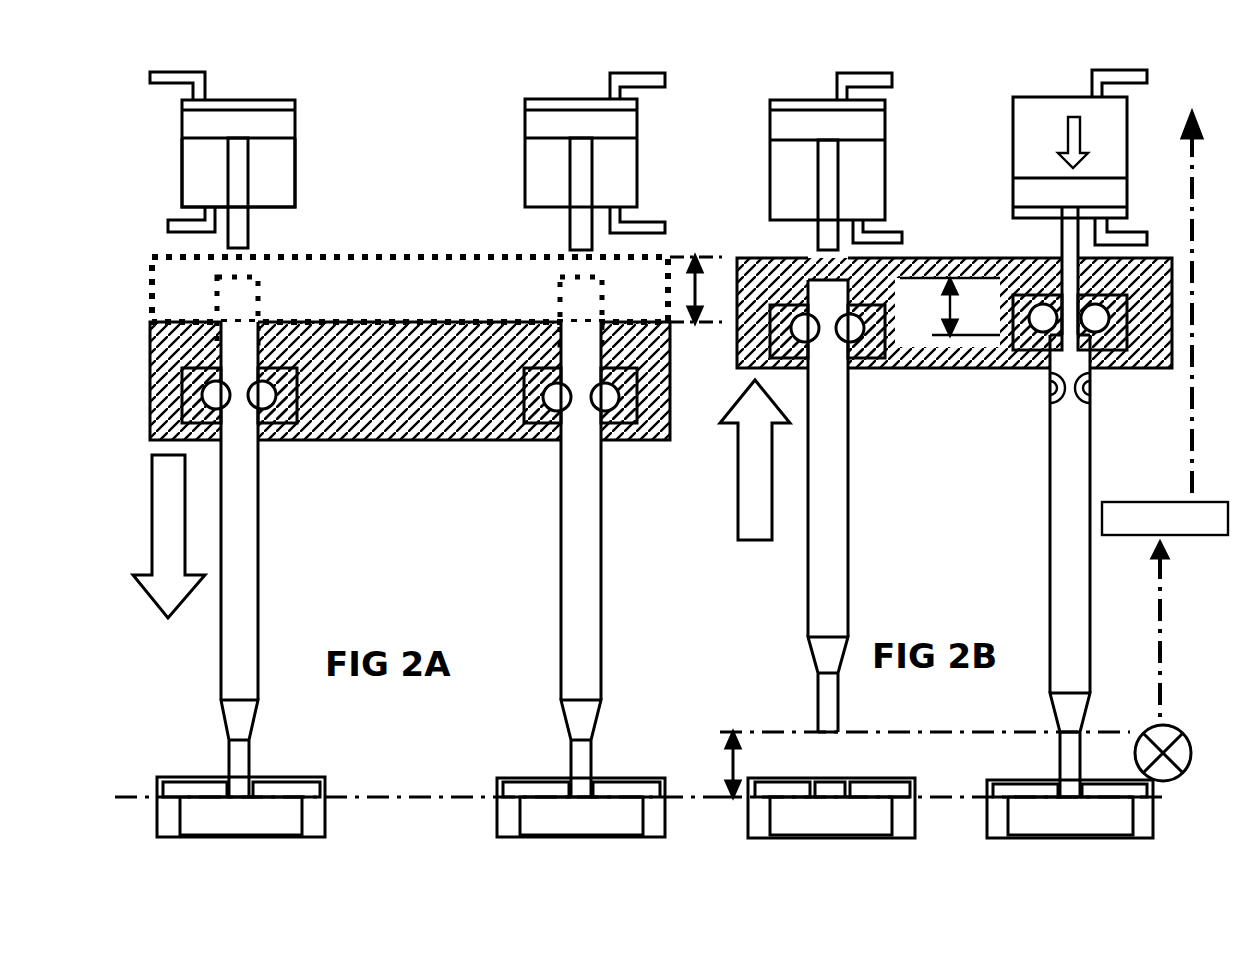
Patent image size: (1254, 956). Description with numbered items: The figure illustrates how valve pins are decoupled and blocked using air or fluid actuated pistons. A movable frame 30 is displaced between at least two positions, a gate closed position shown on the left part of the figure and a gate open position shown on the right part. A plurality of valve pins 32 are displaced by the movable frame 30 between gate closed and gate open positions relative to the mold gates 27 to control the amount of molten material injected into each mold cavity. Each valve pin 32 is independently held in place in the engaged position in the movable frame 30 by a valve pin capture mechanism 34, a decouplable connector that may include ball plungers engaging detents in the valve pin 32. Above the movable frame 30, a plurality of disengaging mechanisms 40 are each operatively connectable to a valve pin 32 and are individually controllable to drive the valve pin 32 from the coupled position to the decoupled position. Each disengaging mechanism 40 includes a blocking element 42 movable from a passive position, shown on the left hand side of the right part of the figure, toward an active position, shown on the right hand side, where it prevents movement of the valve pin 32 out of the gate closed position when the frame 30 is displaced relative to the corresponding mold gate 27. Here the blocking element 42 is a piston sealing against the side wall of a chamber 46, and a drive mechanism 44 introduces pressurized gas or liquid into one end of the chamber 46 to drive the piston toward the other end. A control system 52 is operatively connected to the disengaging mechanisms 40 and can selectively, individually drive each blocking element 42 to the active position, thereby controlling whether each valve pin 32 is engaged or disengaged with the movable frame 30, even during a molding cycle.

In FIG. 2A, the mold gate 27 is at (227, 777).
In FIG. 2B, the mold gate 27 is at (833, 793).
In FIG. 2A, the movable frame 30 is at (205, 320).
In FIG. 2A, the valve pin 32 is at (240, 552).
In FIG. 2B, the valve pin 32 is at (830, 605).
In FIG. 2A, the valve pin capture mechanism 34 is at (182, 347).
In FIG. 2B, the valve pin capture mechanism 34 is at (770, 262).
In FIG. 2A, the disengaging mechanism 40 is at (255, 100).
In FIG. 2B, the disengaging mechanism 40 is at (880, 102).
In FIG. 2A, the blocking element 42 is at (212, 120).
In FIG. 2B, the blocking element 42 is at (812, 127).
In FIG. 2A, the drive mechanism 44 is at (276, 166).
In FIG. 2A, the chamber 46 is at (278, 185).
In FIG. 2B, the control system 52 is at (1186, 508).